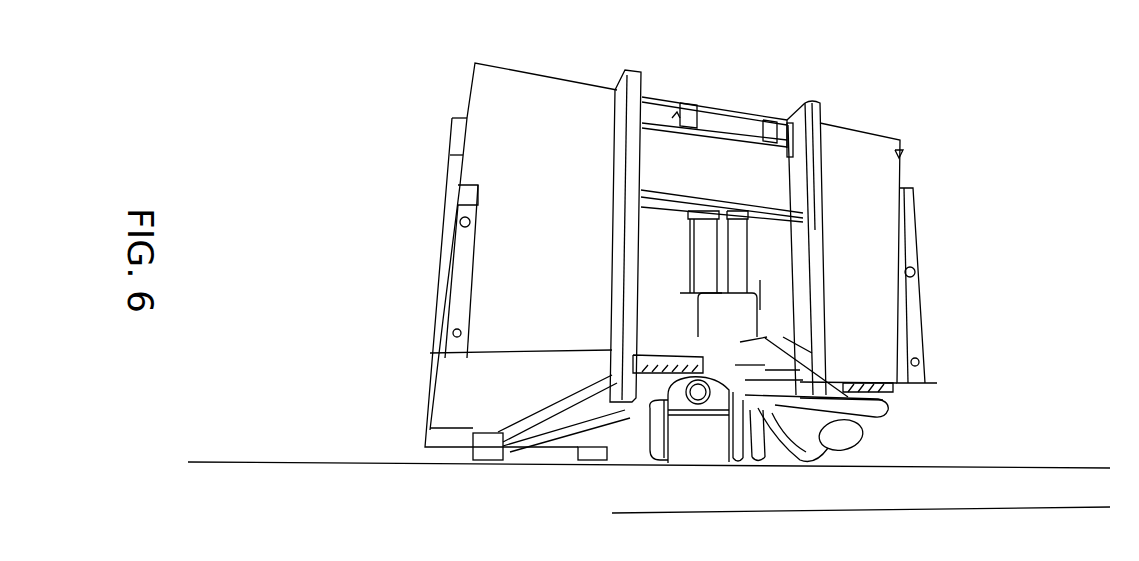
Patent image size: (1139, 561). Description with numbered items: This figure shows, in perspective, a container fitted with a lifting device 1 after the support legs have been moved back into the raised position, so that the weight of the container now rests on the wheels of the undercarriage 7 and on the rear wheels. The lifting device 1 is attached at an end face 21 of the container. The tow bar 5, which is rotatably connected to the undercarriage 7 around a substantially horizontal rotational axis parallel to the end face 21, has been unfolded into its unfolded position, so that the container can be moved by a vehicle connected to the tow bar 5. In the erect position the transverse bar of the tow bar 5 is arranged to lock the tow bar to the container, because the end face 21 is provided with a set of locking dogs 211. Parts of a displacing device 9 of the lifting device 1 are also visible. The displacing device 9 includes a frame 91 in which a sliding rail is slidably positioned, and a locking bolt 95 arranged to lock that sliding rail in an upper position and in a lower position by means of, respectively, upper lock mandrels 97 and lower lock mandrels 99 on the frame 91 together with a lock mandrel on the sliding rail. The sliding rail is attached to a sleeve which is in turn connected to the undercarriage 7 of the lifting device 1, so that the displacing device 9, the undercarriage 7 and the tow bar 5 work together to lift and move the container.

The end face 21 is at (565, 105).
The locking dogs 211 is at (690, 102).
The lifting device 1 is at (630, 346).
The undercarriage 7 is at (595, 409).
The locking bolt 95 is at (690, 290).
The lower lock mandrels 99 is at (693, 297).
The upper lock mandrels 97 is at (790, 229).
The frame 91 is at (747, 247).
The displacing device 9 is at (783, 274).
The tow bar 5 is at (846, 355).